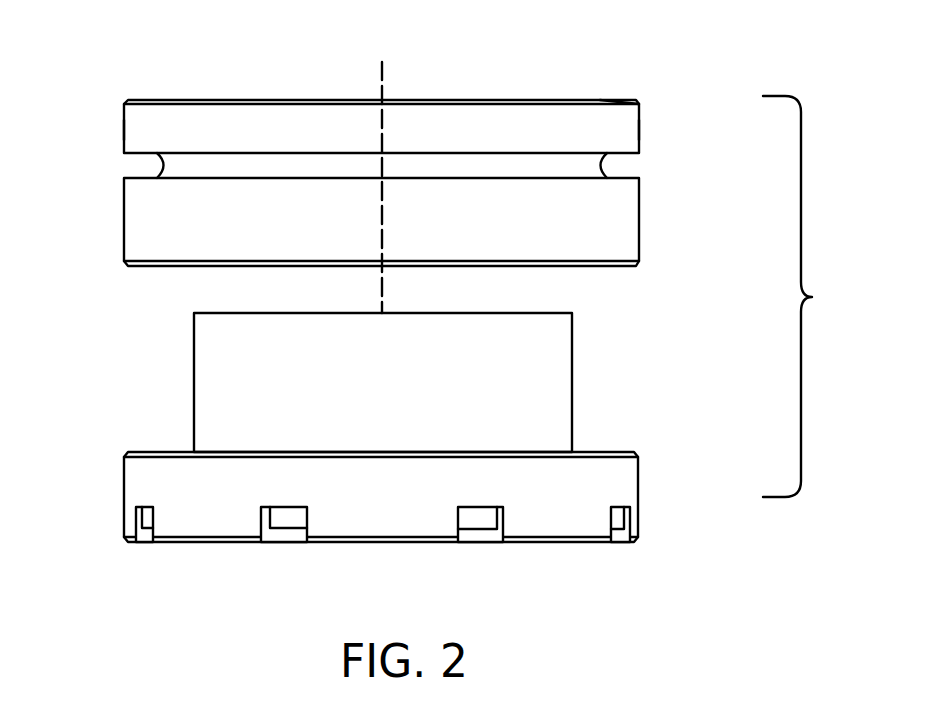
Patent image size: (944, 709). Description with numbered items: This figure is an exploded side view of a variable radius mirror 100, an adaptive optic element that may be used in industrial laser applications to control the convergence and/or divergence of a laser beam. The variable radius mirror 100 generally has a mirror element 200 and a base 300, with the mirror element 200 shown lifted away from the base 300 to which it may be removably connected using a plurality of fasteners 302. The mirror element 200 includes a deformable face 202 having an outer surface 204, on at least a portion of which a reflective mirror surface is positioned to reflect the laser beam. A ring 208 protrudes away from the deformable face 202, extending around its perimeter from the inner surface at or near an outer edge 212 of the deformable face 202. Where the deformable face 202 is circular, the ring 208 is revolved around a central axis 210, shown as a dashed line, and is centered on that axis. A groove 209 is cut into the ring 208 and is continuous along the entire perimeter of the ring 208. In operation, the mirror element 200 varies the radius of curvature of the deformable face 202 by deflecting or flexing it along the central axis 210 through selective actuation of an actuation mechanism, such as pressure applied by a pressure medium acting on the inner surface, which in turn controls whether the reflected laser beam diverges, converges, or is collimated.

The variable radius mirror 100 is at (814, 296).
The mirror element 200 is at (690, 88).
The deformable face 202 is at (140, 88).
The outer surface 204 is at (288, 97).
The ring 208 is at (640, 225).
The groove 209 is at (646, 163).
The central axis 210 is at (384, 73).
The outer edge 212 is at (640, 100).
The base 300 is at (623, 492).
The fasteners 302 is at (482, 522).